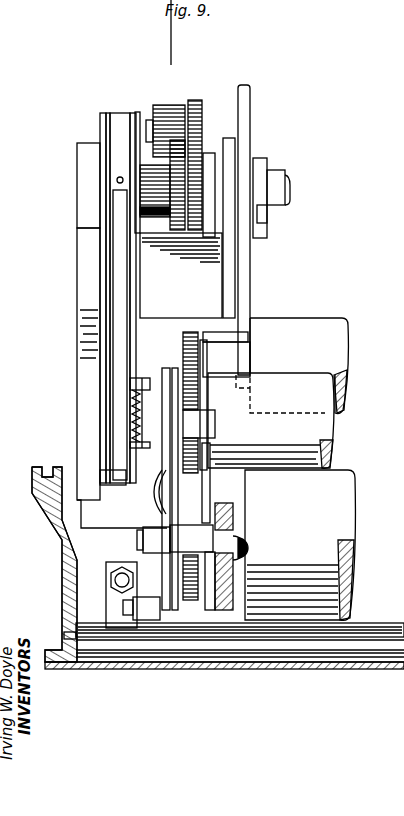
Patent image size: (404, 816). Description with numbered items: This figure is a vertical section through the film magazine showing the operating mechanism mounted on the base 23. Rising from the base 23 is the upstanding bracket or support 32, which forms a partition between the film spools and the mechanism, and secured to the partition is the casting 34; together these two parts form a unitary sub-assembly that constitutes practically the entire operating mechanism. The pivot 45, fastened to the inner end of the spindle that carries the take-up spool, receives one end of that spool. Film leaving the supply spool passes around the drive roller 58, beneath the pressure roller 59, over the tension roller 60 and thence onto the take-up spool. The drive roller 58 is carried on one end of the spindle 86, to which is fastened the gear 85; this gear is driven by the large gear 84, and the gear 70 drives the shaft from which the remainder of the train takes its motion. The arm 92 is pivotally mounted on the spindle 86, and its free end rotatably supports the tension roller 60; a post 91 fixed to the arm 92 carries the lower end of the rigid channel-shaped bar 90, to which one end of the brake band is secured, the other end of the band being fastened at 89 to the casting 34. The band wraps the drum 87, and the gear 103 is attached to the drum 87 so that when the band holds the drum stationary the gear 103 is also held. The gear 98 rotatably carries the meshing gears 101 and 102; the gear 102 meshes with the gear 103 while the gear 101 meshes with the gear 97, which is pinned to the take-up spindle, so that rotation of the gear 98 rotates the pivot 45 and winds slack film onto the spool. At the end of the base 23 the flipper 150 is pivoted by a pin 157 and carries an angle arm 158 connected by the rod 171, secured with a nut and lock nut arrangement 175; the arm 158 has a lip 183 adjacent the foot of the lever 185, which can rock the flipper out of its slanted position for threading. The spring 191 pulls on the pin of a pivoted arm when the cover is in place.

The base 23 is at (283, 672).
The upstanding bracket or support 32 is at (249, 112).
The casting 34 is at (77, 196).
The pivot 45 is at (272, 178).
The drive roller 58 is at (342, 512).
The pressure roller 59 is at (310, 437).
The tension roller 60 is at (340, 333).
The gear 70 is at (212, 332).
The large gear 84 is at (183, 342).
The gear 85 is at (175, 539).
The spindle 86 is at (250, 582).
The drum 87 is at (100, 124).
The brake band fastening 89 is at (112, 155).
The channel-shaped bar 90 is at (105, 343).
The post 91 is at (102, 478).
The arm 92 is at (210, 452).
The gear 97 is at (178, 156).
The gear 98 is at (197, 103).
The gear 101 is at (168, 107).
The gear 102 is at (152, 165).
The gear 103 is at (153, 215).
The flipper 150 is at (90, 628).
The pin 157 is at (64, 636).
The angle arm 158 is at (113, 562).
The rod 171 is at (112, 586).
The nut and lock nut arrangement 175 is at (109, 578).
The lip 183 is at (153, 597).
The lever 185 is at (165, 512).
The spring 191 is at (152, 380).